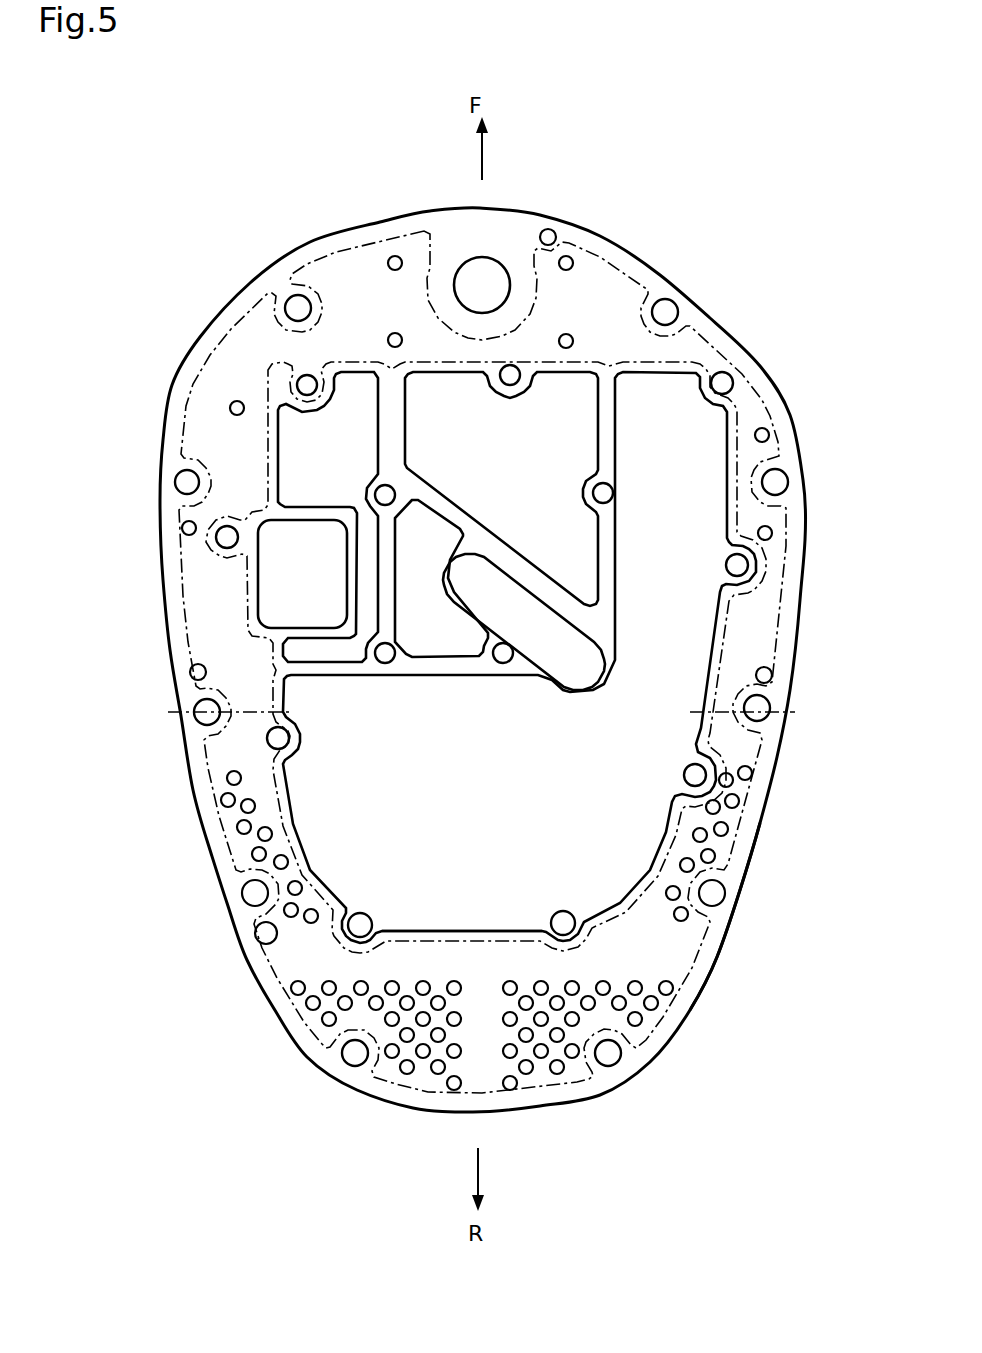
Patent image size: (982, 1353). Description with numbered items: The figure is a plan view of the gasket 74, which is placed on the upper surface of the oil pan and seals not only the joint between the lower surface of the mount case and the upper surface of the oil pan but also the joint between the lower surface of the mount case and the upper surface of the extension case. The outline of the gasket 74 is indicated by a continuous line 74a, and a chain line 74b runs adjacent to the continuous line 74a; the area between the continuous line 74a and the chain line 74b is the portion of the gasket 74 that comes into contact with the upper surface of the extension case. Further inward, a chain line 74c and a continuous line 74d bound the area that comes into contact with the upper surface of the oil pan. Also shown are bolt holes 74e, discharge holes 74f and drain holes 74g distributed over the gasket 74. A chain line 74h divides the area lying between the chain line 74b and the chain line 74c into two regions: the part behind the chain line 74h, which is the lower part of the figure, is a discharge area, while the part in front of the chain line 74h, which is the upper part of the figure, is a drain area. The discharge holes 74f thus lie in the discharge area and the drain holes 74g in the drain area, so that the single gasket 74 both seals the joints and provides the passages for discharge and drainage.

The gasket 74 is at (728, 272).
The continuous line 74a is at (737, 908).
The chain line 74b is at (703, 968).
The chain line 74c is at (316, 866).
The continuous line 74d is at (423, 930).
The bolt holes 74e is at (293, 303).
The discharge holes 74f is at (243, 830).
The drain holes 74g is at (569, 338).
The chain line 74h is at (236, 722).